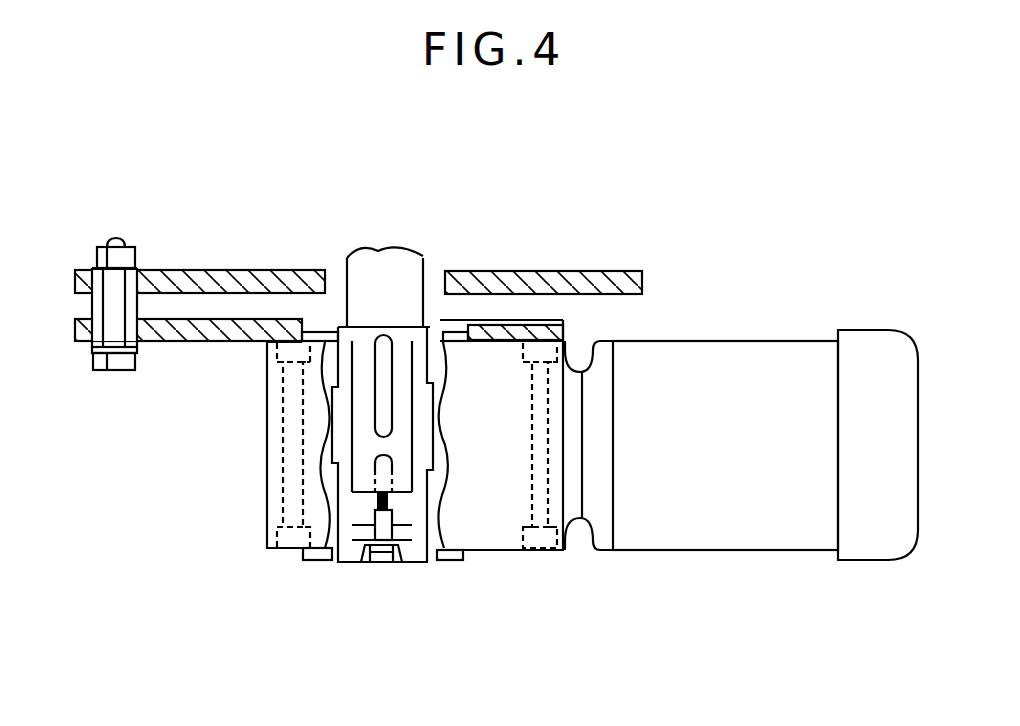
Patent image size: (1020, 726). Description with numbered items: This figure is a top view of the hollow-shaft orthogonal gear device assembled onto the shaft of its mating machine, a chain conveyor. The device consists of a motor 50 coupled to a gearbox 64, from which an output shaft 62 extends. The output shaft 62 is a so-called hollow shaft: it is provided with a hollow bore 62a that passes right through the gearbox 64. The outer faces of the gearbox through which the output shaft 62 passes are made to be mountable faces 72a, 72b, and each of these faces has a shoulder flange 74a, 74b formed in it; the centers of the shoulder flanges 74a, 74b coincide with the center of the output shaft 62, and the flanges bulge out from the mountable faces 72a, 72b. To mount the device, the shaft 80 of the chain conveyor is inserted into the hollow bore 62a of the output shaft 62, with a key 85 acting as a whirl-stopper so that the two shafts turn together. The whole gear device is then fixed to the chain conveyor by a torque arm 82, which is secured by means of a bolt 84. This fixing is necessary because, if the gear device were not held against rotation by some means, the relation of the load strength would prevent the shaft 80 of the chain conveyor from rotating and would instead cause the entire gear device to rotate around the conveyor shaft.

The motor 50 is at (720, 341).
The output shaft 62 is at (410, 518).
The hollow bore 62a is at (408, 562).
The gearbox 64 is at (348, 596).
The mountable face 72a is at (502, 338).
The mountable face 72b is at (503, 560).
The shoulder flange 74a is at (451, 334).
The shoulder flange 74b is at (313, 560).
The shaft 80 is at (415, 260).
The torque arm 82 is at (198, 325).
The bolt 84 is at (283, 466).
The key 85 is at (380, 357).